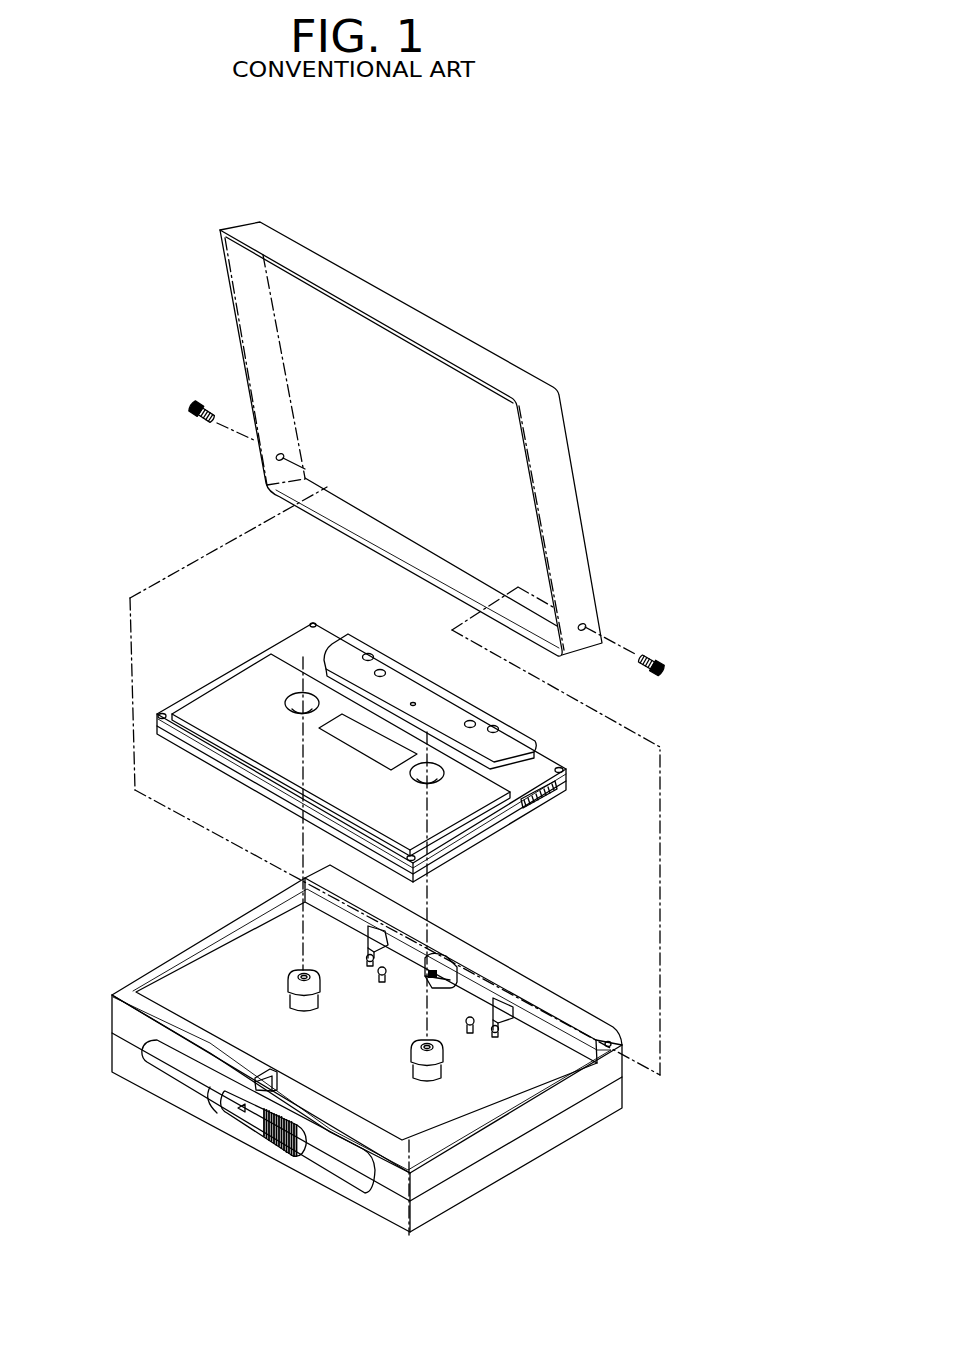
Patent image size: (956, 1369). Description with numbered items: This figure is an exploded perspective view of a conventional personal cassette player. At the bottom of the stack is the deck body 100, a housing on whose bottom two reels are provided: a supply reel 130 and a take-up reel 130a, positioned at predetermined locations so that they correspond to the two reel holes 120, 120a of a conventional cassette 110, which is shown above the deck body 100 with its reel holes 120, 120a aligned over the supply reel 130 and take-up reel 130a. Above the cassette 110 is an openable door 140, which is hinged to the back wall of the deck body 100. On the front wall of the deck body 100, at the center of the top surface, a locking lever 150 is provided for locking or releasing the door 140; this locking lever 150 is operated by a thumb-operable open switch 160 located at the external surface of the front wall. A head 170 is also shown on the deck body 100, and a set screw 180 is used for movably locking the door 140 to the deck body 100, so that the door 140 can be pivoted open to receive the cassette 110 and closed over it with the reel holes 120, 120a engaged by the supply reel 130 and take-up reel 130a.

The deck body 100 is at (477, 1183).
The cassette 110 is at (530, 777).
The reel hole 120 is at (294, 697).
The reel hole 120a is at (436, 775).
The supply reel 130 is at (292, 972).
The take-up reel 130a is at (443, 1054).
The door 140 is at (576, 527).
The locking lever 150 is at (267, 1072).
The open switch 160 is at (255, 1120).
The head 170 is at (450, 968).
The set screw 180 is at (191, 405).